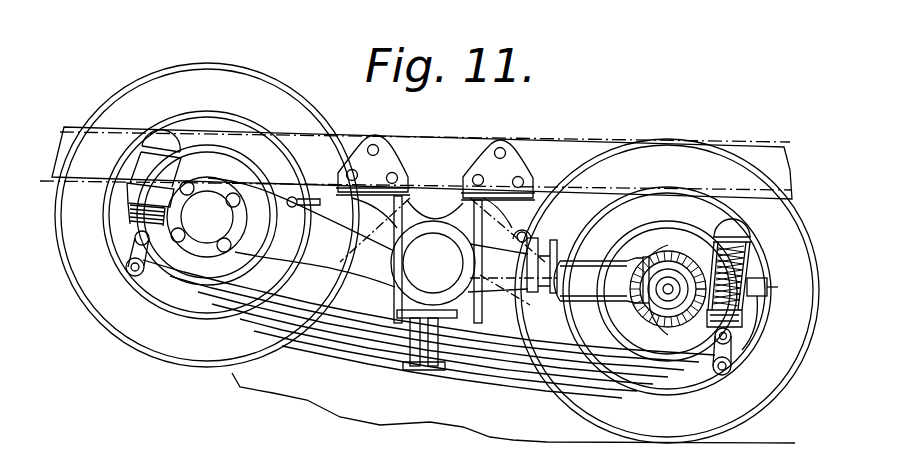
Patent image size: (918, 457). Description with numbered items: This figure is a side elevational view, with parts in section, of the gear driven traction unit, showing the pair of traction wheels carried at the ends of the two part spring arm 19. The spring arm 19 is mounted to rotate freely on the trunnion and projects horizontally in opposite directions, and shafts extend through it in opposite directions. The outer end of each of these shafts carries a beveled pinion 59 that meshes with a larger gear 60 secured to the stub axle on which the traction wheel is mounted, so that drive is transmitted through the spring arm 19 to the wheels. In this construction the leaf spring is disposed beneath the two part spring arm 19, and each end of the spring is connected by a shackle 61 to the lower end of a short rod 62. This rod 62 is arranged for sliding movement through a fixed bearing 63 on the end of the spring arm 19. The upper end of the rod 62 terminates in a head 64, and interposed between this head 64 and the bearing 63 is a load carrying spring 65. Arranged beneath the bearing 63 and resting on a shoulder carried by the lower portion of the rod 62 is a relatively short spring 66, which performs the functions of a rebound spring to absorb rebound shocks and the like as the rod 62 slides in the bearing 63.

The spring arm 19 is at (572, 226).
The beveled pinion 59 is at (632, 292).
The gear 60 is at (665, 318).
The shackle 61 is at (128, 262).
The short rod 62 is at (742, 234).
The fixed bearing 63 is at (760, 282).
The head 64 is at (715, 243).
The load carrying spring 65 is at (750, 255).
The rebound spring 66 is at (130, 212).